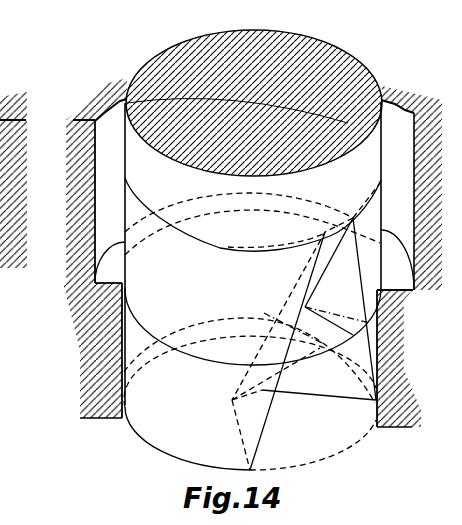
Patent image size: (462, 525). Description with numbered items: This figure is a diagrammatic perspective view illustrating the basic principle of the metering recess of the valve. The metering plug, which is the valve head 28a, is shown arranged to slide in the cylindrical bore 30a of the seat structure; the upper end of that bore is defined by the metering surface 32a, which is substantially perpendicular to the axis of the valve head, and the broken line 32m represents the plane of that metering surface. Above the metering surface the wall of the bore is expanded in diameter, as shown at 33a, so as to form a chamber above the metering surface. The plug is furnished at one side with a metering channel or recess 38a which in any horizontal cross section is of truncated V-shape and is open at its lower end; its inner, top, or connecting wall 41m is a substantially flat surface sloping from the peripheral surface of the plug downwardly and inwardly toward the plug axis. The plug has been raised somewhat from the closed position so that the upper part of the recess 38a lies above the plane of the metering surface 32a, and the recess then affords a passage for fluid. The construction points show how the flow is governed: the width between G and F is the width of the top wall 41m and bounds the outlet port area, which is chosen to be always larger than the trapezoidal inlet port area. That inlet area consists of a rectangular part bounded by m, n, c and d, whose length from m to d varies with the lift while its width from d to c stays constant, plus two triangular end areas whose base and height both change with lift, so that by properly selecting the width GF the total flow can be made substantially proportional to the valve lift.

The valve head 28a is at (170, 63).
The expanded wall of the bore 33a is at (93, 187).
The metering surface 32a is at (97, 284).
The broken line representing the plane of the metering surface 32m is at (137, 313).
The cylindrical bore 30a is at (120, 346).
The top wall of the recess 41m is at (327, 237).
The metering recess 38a is at (331, 432).
The point F is at (353, 217).
The point G is at (322, 232).
The point c is at (305, 307).
The point d is at (285, 321).
The point n is at (319, 353).
The point m is at (249, 394).